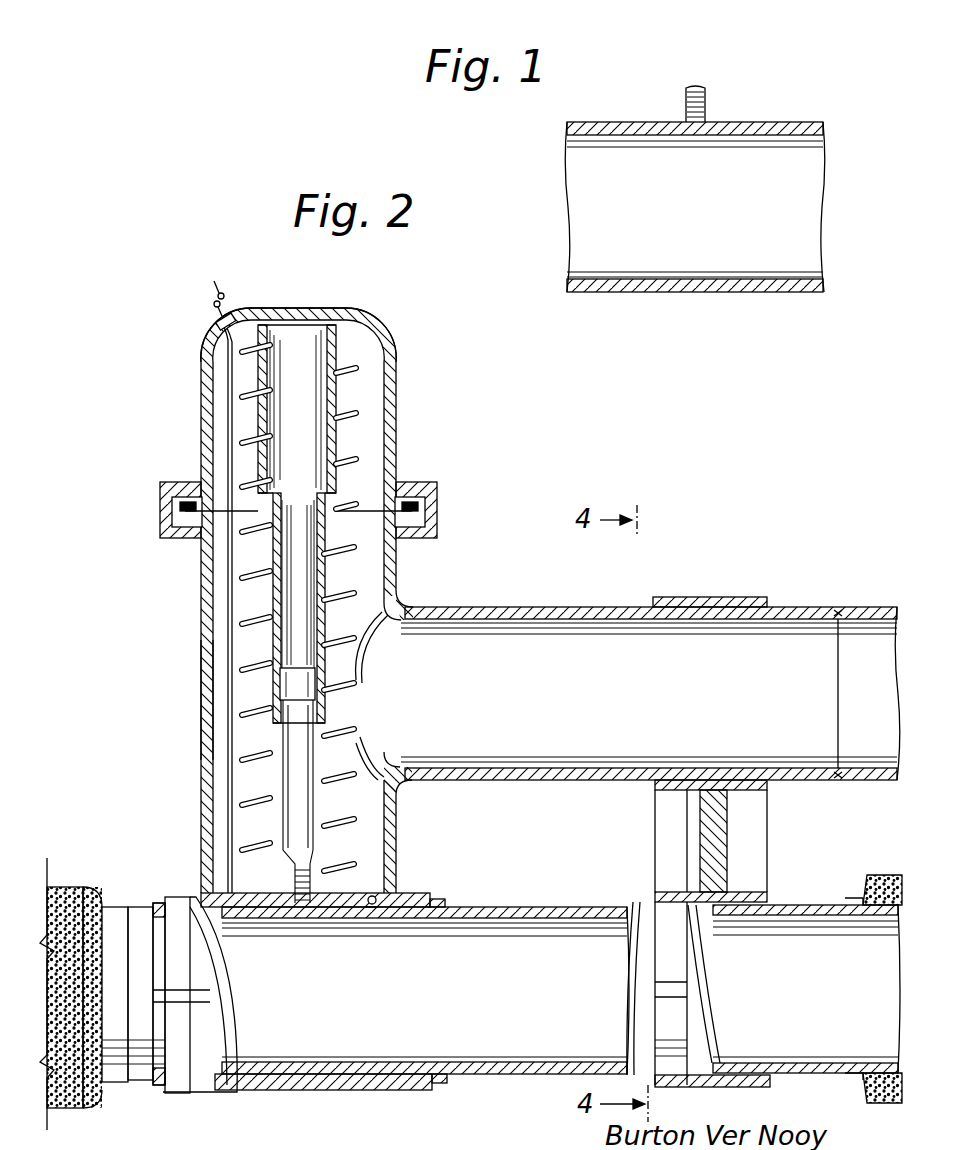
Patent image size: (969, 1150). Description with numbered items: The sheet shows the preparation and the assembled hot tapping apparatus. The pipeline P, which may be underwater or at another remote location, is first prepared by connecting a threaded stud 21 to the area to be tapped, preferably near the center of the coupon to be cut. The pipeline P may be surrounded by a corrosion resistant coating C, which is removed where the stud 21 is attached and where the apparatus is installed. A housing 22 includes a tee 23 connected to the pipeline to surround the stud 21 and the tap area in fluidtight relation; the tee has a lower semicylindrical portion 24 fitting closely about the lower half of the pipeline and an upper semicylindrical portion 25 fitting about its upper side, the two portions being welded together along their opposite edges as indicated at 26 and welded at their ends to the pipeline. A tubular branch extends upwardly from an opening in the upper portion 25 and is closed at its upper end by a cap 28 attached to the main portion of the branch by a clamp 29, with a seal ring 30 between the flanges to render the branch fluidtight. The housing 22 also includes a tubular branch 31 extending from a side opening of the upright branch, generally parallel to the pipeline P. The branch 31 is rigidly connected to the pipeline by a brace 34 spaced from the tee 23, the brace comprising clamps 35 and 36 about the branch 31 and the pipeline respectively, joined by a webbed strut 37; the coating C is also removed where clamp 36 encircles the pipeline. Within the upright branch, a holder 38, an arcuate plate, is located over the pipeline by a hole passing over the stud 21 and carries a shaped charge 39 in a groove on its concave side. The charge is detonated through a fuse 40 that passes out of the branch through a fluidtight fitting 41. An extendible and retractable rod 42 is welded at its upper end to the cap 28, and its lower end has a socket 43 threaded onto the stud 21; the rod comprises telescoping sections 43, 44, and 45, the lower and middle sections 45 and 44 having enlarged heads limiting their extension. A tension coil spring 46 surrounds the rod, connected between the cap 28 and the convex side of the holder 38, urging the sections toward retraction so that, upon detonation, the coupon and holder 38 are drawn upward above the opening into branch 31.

In FIG. 1, the threaded stud 21 is at (708, 92).
In FIG. 1, the pipeline P is at (806, 122).
In FIG. 2, the pipeline P is at (545, 907).
In FIG. 2, the corrosion resistant coating C is at (78, 887).
In FIG. 2, the housing 22 is at (396, 412).
In FIG. 2, the tee 23 is at (202, 720).
In FIG. 2, the lower semicylindrical portion 24 is at (331, 1092).
In FIG. 2, the upper semicylindrical portion 25 is at (430, 895).
In FIG. 2, the weld 26 is at (190, 993).
In FIG. 2, the cap 28 is at (400, 352).
In FIG. 2, the clamp 29 is at (160, 497).
In FIG. 2, the seal ring 30 is at (408, 495).
In FIG. 2, the tubular branch 31 is at (470, 607).
In FIG. 2, the brace 34 is at (716, 838).
In FIG. 2, the clamp 35 is at (708, 597).
In FIG. 2, the clamp 36 is at (758, 892).
In FIG. 2, the webbed strut 37 is at (662, 816).
In FIG. 2, the holder 38 is at (366, 893).
In FIG. 2, the shaped charge 39 is at (372, 912).
In FIG. 2, the fuse 40 is at (228, 417).
In FIG. 2, the fluidtight fitting 41 is at (216, 321).
In FIG. 2, the extendible and retractable rod 42 is at (332, 580).
In FIG. 2, the rod section 43 is at (337, 397).
In FIG. 2, the rod section 44 is at (286, 592).
In FIG. 2, the rod section 45 is at (340, 758).
In FIG. 2, the tension coil spring 46 is at (328, 697).